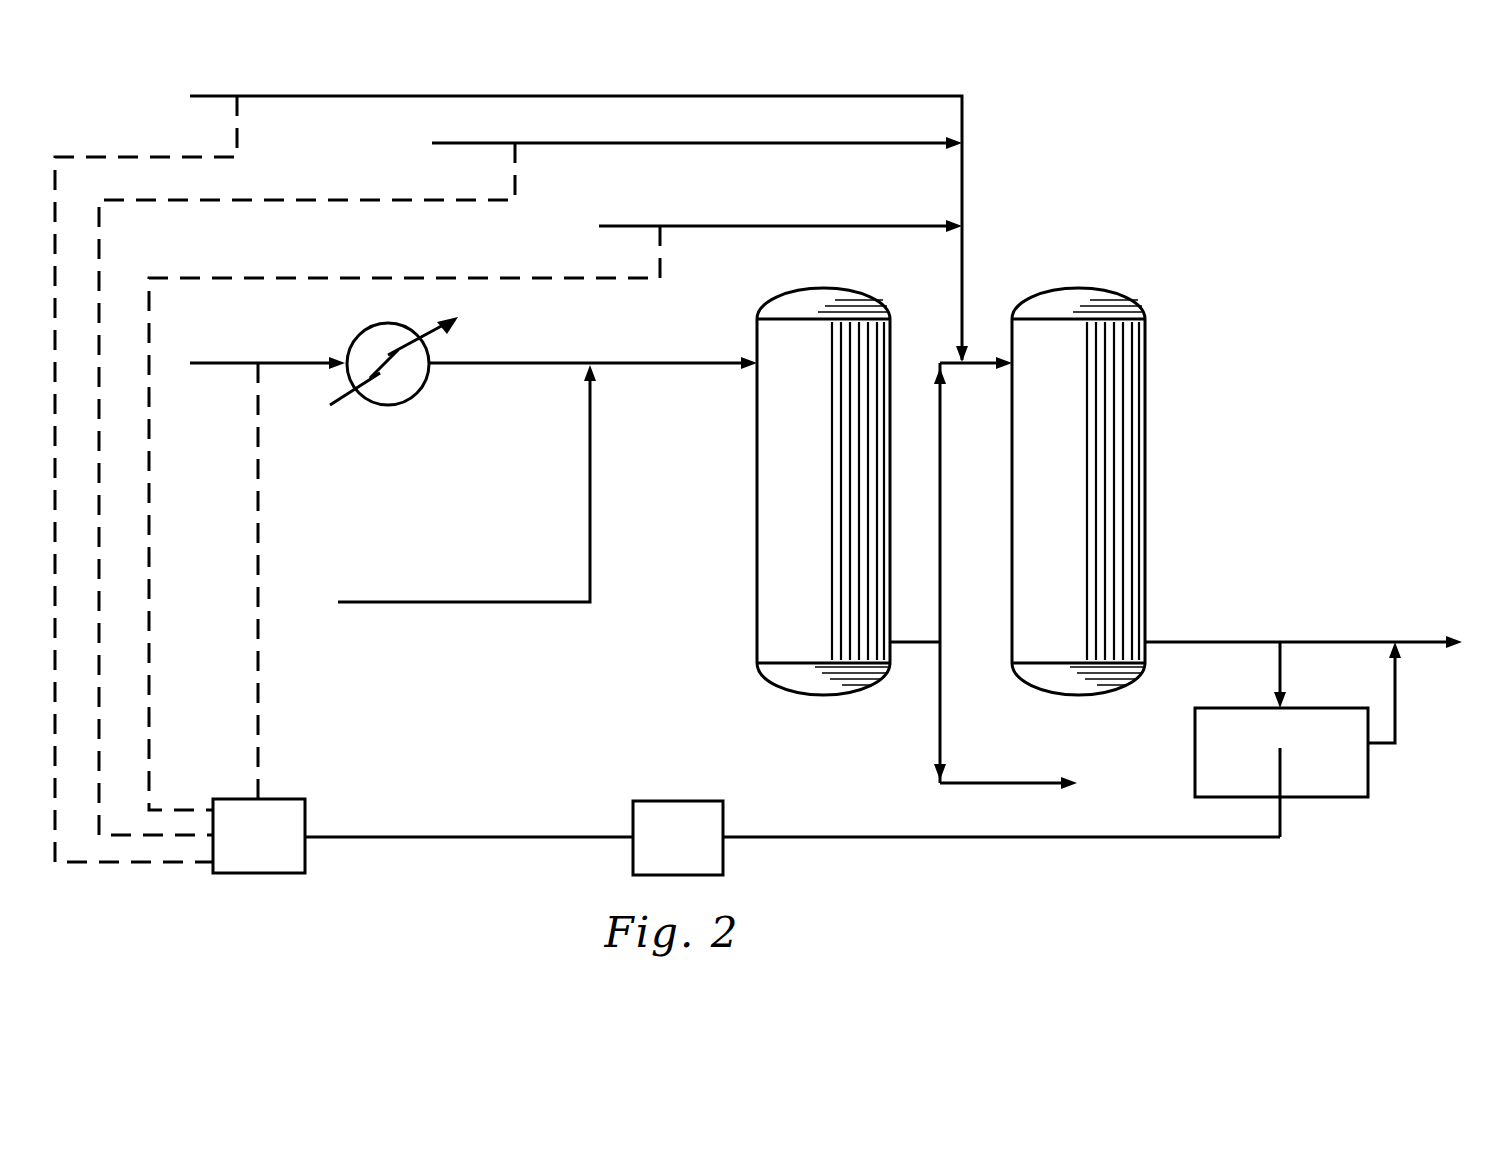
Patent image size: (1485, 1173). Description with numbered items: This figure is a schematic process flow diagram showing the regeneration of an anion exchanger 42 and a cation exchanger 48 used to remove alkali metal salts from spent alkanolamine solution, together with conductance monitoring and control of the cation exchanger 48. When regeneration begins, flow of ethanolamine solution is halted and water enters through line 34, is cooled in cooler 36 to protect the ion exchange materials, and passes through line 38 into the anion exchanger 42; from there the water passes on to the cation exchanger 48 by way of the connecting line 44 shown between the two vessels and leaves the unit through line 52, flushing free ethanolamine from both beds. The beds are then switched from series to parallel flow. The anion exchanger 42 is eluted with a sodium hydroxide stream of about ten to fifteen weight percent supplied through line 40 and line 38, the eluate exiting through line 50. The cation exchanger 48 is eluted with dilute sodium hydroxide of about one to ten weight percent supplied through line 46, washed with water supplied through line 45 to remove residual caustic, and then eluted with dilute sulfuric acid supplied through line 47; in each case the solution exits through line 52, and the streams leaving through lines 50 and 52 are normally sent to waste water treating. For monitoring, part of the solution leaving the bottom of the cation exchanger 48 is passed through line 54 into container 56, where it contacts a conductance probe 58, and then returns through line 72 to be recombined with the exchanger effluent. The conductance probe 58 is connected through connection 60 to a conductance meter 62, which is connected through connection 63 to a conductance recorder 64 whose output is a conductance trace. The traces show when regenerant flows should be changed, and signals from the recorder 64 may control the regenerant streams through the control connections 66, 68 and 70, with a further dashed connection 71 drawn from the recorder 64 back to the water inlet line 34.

The line 34 is at (287, 360).
The cooler 36 is at (434, 382).
The line 38 is at (566, 361).
The line 40 is at (362, 604).
The anion exchanger 42 is at (803, 645).
The transfer line 44 is at (943, 432).
The line 45 is at (648, 145).
The line 46 is at (296, 97).
The line 47 is at (740, 228).
The cation exchanger 48 is at (1063, 645).
The line 50 is at (1004, 781).
The line 52 is at (1190, 641).
The line 54 is at (1278, 668).
The container 56 is at (1328, 799).
The conductance probe 58 is at (1284, 750).
The connection 60 is at (797, 836).
The conductance meter 62 is at (663, 848).
The connection 63 is at (479, 836).
The conductance recorder 64 is at (242, 847).
The control signal connection 66 is at (98, 158).
The control signal connection 68 is at (284, 202).
The control signal connection 70 is at (436, 278).
The control signal line 71 is at (256, 509).
The line 72 is at (1398, 722).